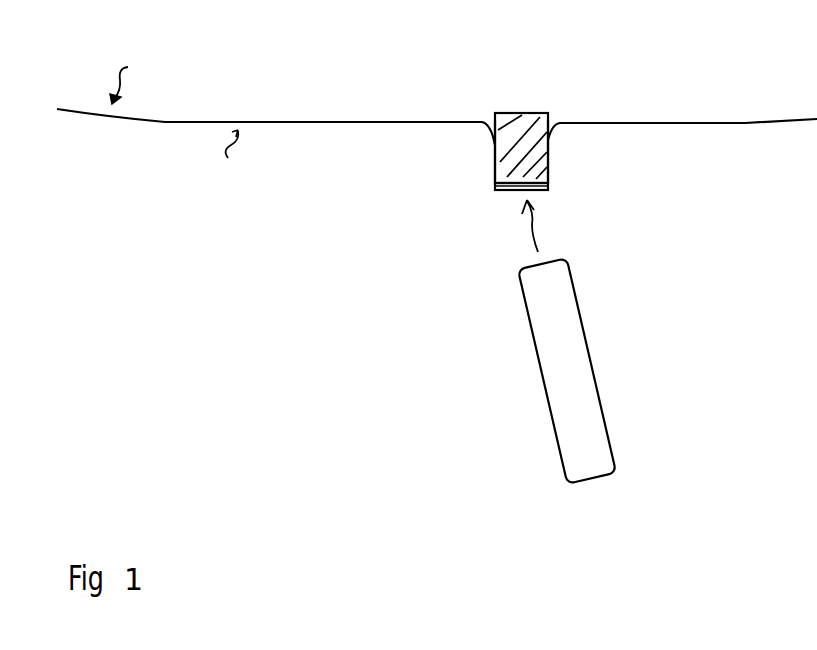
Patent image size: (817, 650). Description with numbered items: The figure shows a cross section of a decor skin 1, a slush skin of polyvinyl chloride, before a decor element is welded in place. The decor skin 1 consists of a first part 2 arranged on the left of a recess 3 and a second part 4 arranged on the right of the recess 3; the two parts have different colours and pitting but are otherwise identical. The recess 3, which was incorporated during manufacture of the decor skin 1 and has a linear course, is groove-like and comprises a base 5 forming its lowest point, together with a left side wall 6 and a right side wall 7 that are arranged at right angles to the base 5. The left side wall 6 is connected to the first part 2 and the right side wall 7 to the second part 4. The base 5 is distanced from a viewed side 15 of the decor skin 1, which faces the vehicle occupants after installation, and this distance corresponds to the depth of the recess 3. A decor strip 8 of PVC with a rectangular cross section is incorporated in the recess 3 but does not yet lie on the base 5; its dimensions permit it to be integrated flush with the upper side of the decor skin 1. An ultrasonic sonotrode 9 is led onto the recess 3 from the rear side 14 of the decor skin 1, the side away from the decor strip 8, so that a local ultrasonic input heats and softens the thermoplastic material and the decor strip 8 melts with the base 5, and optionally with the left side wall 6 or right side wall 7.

The decor skin 1 is at (252, 122).
The first part 2 is at (377, 123).
The recess 3 is at (548, 190).
The second part 4 is at (673, 127).
The base 5 is at (497, 192).
The left side wall 6 is at (495, 159).
The right side wall 7 is at (550, 153).
The decor strip 8 is at (517, 112).
The ultrasonic sonotrode 9 is at (592, 350).
The rear side 14 is at (217, 158).
The viewed side 15 is at (136, 73).